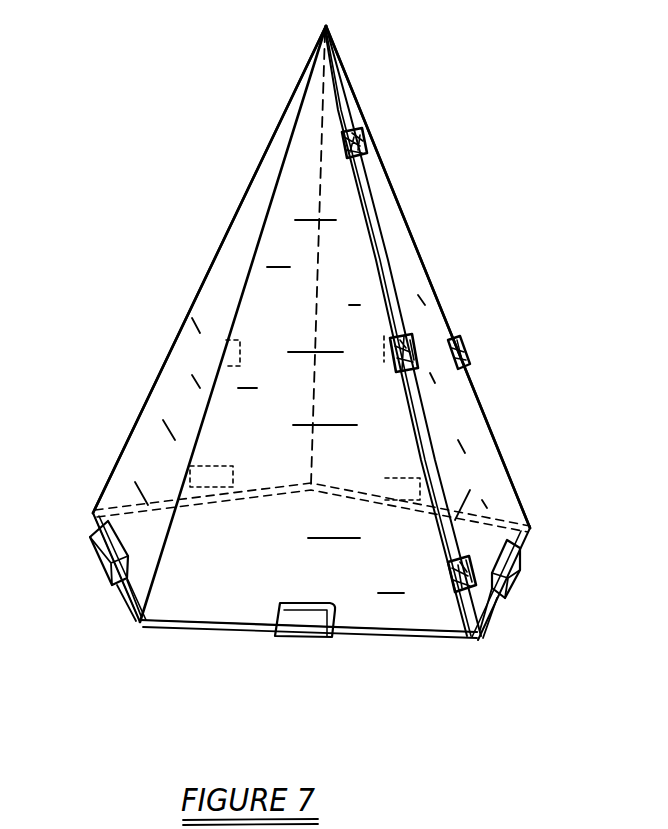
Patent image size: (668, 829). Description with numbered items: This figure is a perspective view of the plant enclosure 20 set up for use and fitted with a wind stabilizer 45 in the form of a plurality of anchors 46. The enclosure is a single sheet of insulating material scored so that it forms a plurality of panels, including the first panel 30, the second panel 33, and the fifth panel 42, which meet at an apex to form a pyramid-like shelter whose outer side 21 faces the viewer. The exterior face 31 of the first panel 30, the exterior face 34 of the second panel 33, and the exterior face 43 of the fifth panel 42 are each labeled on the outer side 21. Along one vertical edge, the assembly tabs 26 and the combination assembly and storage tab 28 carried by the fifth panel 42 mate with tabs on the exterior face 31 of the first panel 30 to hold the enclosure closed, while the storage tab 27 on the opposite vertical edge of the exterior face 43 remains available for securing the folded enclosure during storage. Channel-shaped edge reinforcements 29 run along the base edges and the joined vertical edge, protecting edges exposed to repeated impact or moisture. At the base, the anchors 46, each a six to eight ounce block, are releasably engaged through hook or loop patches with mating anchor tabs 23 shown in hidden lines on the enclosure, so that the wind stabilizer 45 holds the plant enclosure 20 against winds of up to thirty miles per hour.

The plant enclosure 20 is at (429, 88).
The outer side 21 is at (223, 268).
The mating anchor tab 23 is at (205, 488).
The assembly tab 26 is at (368, 158).
The storage tab 27 is at (462, 356).
The combination assembly and storage tab 28 is at (393, 358).
The edge reinforcement 29 is at (434, 440).
The first panel 30 is at (363, 615).
The exterior face of the first panel 31 is at (342, 572).
The second panel 33 is at (176, 385).
The exterior face of the second panel 34 is at (226, 317).
The fifth panel 42 is at (408, 249).
The exterior face of the fifth panel 43 is at (499, 490).
The wind stabilizer 45 is at (554, 543).
The anchor 46 is at (100, 556).